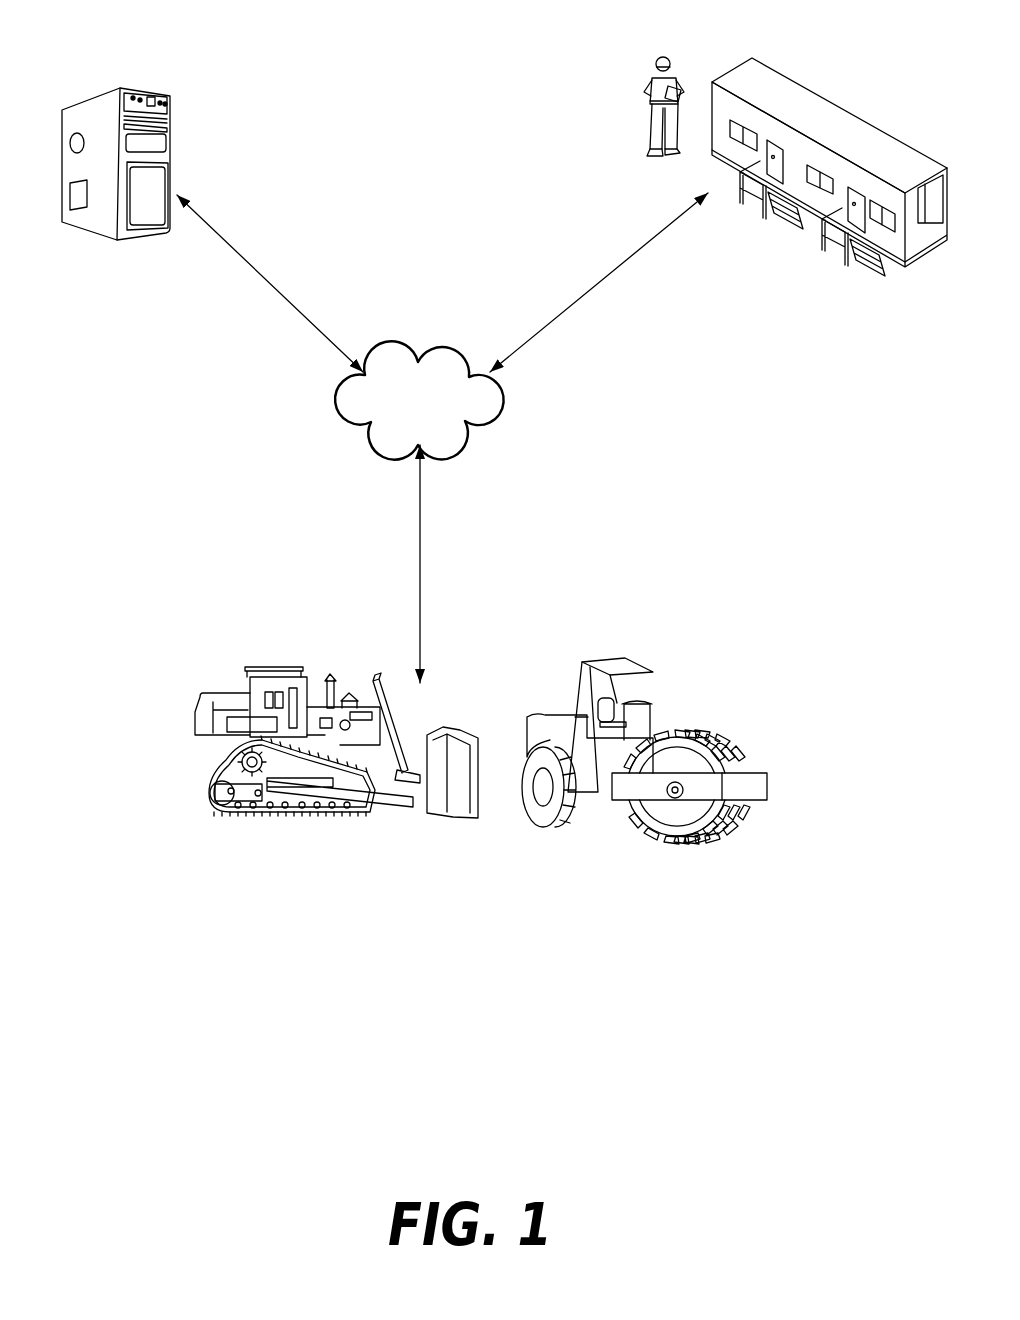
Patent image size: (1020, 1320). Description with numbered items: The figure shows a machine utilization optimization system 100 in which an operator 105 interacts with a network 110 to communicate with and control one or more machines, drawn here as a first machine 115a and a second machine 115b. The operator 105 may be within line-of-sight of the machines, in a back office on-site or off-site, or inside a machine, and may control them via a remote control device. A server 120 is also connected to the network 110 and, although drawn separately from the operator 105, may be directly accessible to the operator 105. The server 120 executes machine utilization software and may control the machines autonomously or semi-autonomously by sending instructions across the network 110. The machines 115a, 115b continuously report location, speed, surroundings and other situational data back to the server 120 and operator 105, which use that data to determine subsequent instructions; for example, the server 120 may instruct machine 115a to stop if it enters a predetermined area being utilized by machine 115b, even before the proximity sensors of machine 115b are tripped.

The machine utilization optimization system 100 is at (84, 1054).
The operator 105 is at (628, 102).
The network 110 is at (493, 415).
The machine 115a is at (318, 833).
The machine 115b is at (600, 838).
The server 120 is at (172, 103).